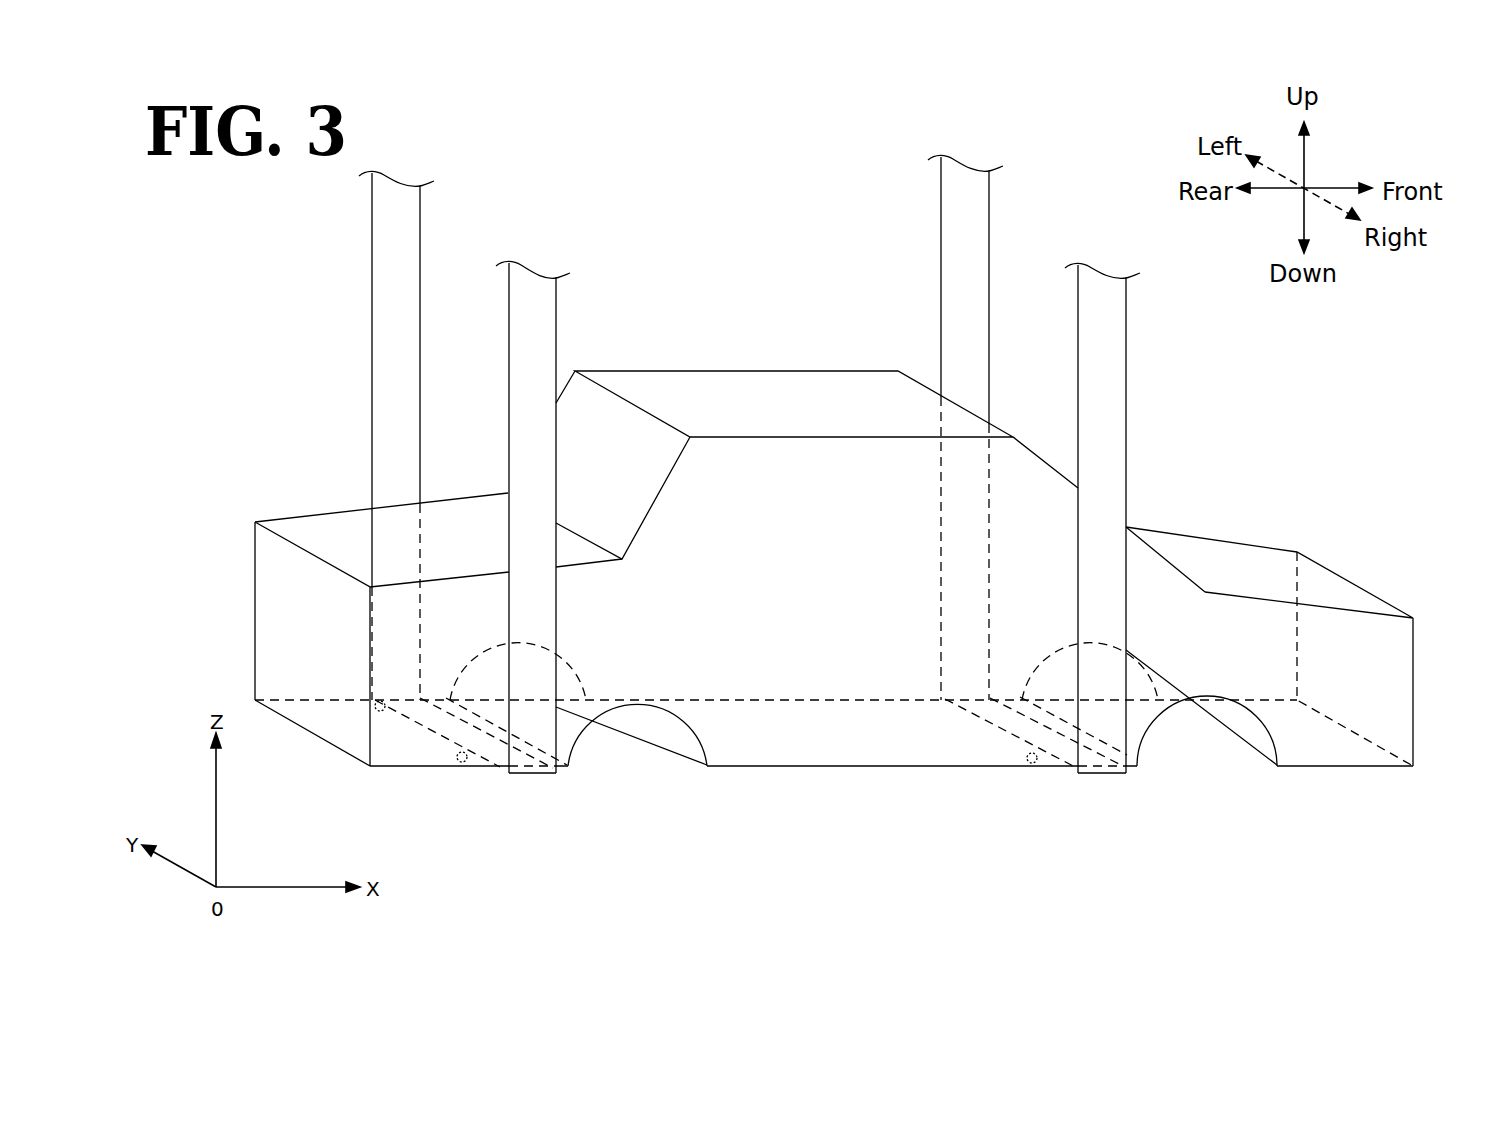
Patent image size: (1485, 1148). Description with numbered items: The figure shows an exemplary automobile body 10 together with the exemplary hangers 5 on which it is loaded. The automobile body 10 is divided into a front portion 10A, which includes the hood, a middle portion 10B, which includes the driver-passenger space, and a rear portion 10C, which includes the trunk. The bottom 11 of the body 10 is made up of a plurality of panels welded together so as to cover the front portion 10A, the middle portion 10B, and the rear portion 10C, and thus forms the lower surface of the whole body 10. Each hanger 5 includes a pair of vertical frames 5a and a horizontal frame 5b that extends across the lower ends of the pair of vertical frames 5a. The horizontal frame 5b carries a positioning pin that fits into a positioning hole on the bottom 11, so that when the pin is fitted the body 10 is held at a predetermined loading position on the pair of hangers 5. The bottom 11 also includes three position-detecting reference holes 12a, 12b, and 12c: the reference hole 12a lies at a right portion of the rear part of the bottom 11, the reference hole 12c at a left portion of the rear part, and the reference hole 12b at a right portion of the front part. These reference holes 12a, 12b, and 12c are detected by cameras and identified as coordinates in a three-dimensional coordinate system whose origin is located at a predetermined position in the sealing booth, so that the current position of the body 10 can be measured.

The hanger 5 is at (712, 464).
The vertical frame 5a is at (388, 281).
The horizontal frame 5b is at (408, 697).
The automobile body 10 is at (834, 504).
The front portion 10A is at (1240, 561).
The middle portion 10B is at (799, 386).
The rear portion 10C is at (347, 537).
The bottom 11 is at (792, 730).
The reference hole 12a is at (456, 758).
The reference hole 12b is at (1026, 757).
The reference hole 12c is at (374, 706).